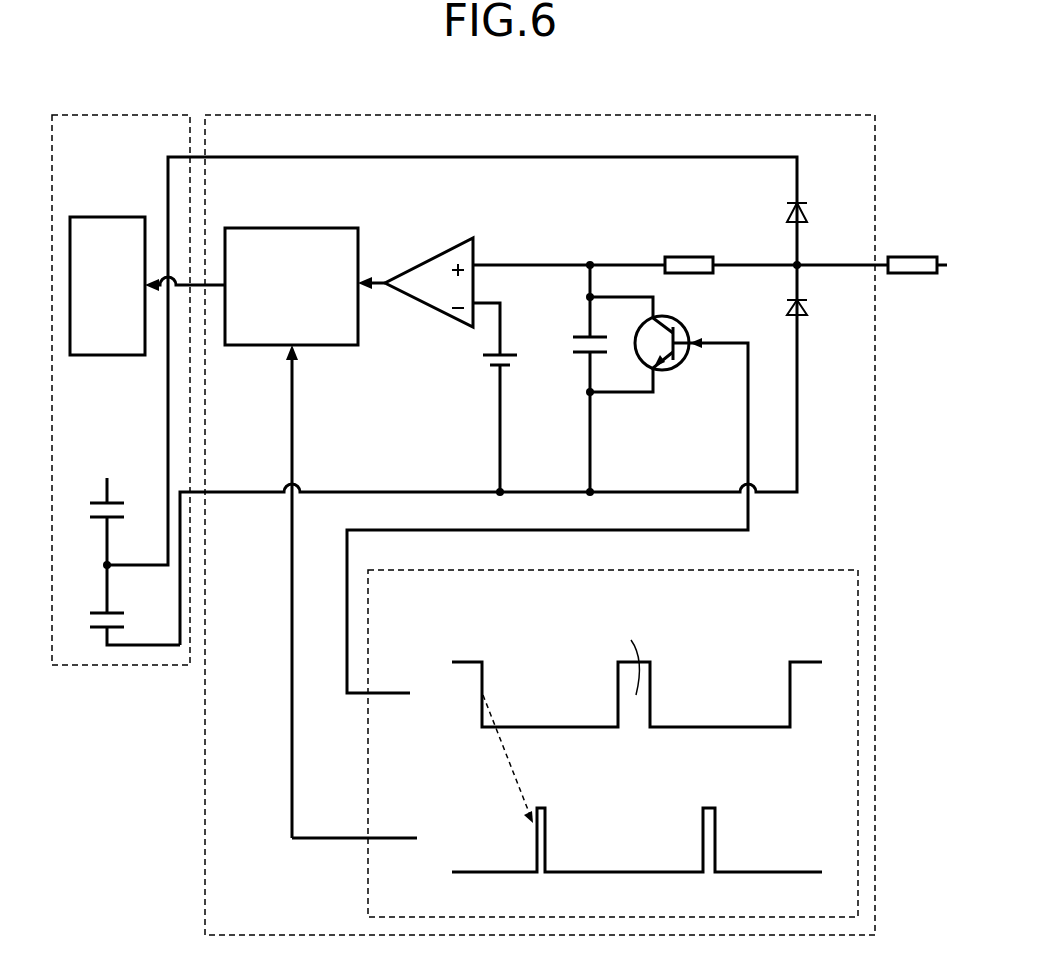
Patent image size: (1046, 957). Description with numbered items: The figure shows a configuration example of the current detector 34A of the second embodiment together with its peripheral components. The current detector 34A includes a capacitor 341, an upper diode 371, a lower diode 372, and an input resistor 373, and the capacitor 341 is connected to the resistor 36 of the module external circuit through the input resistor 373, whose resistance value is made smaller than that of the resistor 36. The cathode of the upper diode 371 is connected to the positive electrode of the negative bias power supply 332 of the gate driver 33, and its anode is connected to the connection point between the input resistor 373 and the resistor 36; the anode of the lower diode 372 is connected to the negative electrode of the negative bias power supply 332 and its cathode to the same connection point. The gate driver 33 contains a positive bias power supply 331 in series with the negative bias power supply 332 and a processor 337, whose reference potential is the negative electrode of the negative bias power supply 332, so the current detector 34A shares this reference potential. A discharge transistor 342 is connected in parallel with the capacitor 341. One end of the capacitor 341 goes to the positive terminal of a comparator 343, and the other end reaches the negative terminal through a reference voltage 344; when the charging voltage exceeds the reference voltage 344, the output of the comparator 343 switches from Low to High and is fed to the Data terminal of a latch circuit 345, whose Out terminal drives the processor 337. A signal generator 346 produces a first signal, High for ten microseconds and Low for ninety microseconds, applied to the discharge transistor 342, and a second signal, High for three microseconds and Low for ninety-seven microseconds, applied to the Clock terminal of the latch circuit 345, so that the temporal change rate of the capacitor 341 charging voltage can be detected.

The gate driver 33 is at (110, 115).
The current detector 34A is at (505, 116).
The resistor 36 is at (913, 257).
The positive bias power supply 331 is at (100, 500).
The negative bias power supply 332 is at (100, 632).
The processor 337 is at (122, 357).
The capacitor 341 is at (583, 354).
The discharge transistor 342 is at (668, 371).
The comparator 343 is at (417, 262).
The reference voltage 344 is at (497, 366).
The latch circuit 345 is at (290, 228).
The signal generator 346 is at (860, 595).
The upper diode 371 is at (807, 215).
The lower diode 372 is at (807, 314).
The input resistor 373 is at (691, 257).